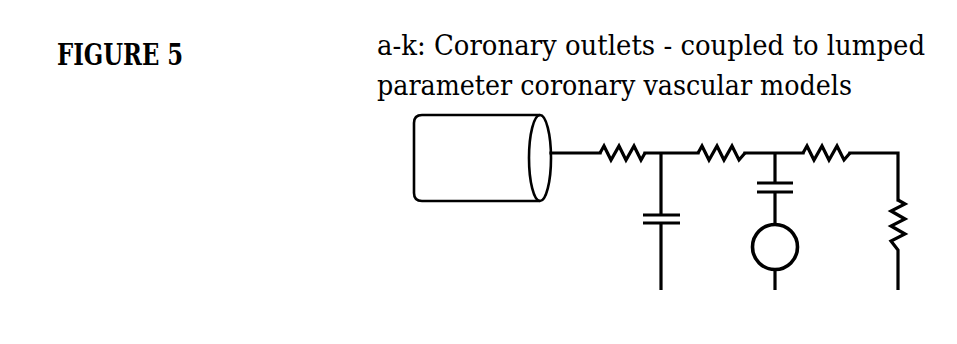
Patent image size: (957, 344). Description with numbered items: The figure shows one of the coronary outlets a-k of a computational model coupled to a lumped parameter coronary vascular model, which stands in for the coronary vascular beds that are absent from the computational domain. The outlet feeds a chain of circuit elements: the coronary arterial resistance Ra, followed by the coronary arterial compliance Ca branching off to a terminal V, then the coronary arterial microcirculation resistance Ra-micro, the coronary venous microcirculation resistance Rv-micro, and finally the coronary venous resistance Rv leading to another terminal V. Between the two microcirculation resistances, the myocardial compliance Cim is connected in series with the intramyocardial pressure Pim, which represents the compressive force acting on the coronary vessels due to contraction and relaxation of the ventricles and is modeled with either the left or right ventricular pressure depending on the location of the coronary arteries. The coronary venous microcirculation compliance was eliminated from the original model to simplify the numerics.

The coronary arterial resistance Ra is at (622, 140).
The coronary arterial microcirculation resistance Ra-micro is at (727, 140).
The coronary venous microcirculation resistance Rv-micro is at (840, 140).
The coronary arterial compliance Ca is at (648, 221).
The myocardial compliance Cim is at (759, 188).
The intramyocardial pressure Pim is at (775, 258).
The coronary venous resistance Rv is at (882, 245).
The venous pressure terminal V is at (780, 311).